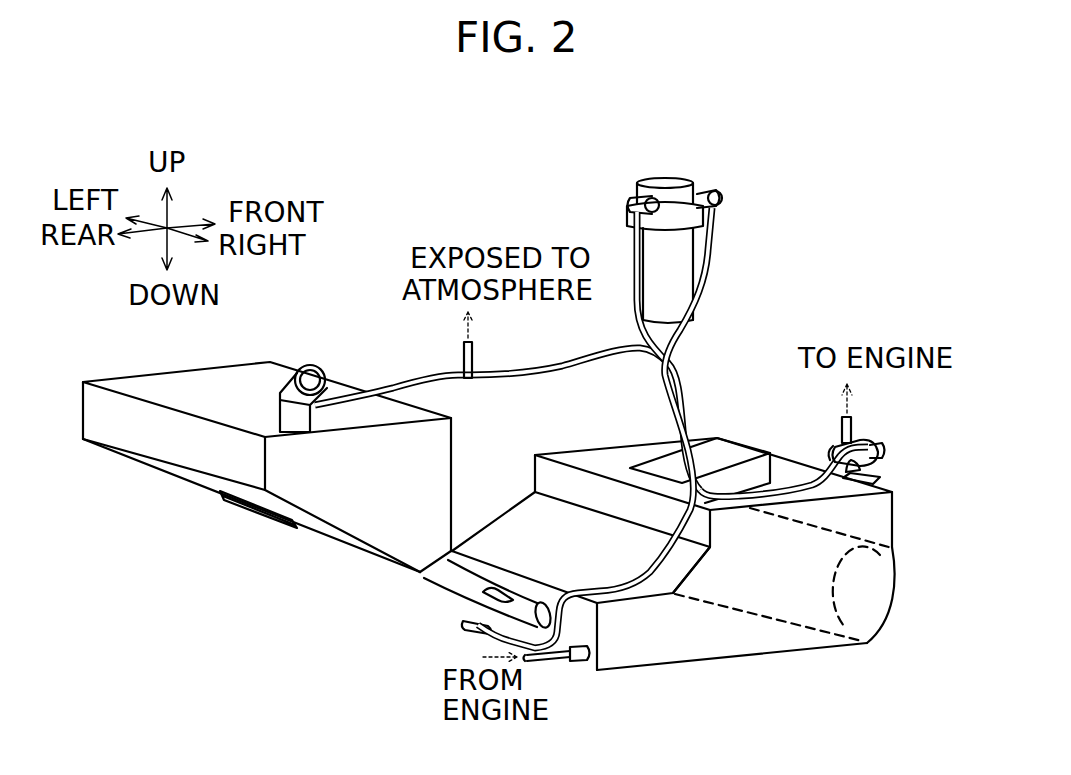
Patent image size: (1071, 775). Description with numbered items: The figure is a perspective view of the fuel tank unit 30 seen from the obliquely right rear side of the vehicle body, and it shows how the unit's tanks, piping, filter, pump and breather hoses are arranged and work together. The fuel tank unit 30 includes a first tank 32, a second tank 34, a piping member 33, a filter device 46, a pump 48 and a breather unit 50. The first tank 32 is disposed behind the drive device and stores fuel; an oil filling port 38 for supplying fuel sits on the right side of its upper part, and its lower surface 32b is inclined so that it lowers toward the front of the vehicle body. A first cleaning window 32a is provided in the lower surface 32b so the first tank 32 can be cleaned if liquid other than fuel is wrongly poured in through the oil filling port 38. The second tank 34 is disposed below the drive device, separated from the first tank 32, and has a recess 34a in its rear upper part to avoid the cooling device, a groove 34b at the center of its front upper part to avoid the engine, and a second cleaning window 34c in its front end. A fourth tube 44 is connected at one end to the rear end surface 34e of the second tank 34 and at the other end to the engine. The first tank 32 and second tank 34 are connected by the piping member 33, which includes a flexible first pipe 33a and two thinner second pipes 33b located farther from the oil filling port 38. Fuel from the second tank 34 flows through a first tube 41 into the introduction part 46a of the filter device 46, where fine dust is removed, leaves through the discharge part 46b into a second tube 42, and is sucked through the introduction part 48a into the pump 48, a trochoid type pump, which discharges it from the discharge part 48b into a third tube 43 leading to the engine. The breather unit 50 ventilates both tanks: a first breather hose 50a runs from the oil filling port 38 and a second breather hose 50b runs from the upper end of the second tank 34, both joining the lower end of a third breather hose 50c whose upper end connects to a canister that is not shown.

The fuel tank unit 30 is at (843, 240).
The first tank 32 is at (155, 494).
The first cleaning window 32a is at (247, 526).
The lower surface 32b is at (360, 548).
The piping member 33 is at (416, 631).
The first pipe 33a is at (470, 612).
The second pipes 33b is at (408, 590).
The second tank 34 is at (695, 564).
The recess 34a is at (549, 505).
The groove 34b is at (770, 478).
The second cleaning window 34c is at (883, 605).
The rear end surface 34e is at (580, 613).
The oil filling port 38 is at (308, 366).
The first tube 41 is at (620, 590).
The second tube 42 is at (641, 336).
The third tube 43 is at (841, 428).
The fourth tube 44 is at (560, 670).
The filter device 46 is at (676, 231).
The introduction part 46a is at (722, 205).
The discharge part 46b is at (630, 205).
The pump 48 is at (835, 445).
The introduction part 48a is at (876, 446).
The discharge part 48b is at (852, 433).
The breather unit 50 is at (491, 338).
The first breather hose 50a is at (415, 383).
The second breather hose 50b is at (528, 374).
The third breather hose 50c is at (473, 365).